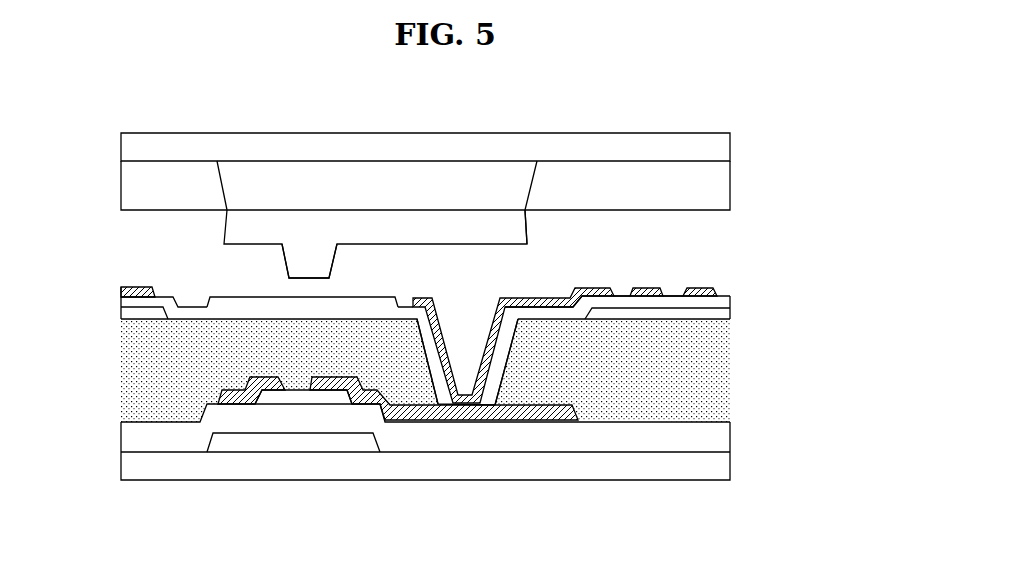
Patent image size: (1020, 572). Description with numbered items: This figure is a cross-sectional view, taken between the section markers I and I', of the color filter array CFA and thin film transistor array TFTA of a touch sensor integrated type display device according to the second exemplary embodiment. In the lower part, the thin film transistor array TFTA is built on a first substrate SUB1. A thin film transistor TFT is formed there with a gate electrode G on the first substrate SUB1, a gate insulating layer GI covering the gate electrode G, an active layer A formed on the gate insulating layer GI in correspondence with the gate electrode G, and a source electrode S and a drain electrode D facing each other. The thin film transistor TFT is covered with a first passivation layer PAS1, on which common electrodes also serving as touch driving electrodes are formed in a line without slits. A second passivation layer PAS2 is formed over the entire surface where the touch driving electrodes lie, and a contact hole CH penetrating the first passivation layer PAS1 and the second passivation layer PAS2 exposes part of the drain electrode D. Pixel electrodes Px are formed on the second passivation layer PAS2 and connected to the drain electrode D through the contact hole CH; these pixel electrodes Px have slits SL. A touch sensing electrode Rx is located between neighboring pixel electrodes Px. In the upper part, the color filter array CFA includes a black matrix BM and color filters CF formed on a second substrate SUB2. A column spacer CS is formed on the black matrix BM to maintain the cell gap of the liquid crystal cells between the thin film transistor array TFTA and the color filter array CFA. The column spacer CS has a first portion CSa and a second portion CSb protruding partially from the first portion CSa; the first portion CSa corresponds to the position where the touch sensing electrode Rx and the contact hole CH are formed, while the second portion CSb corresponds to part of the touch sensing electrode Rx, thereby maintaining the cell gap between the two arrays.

The color filter array CFA is at (434, 182).
The second substrate SUB2 is at (723, 148).
The color filter CF is at (121, 187).
The black matrix BM is at (384, 177).
The column spacer CS is at (223, 228).
The first portion CSa is at (527, 228).
The second portion CSb is at (330, 262).
The thin film transistor array TFTA is at (442, 396).
The first substrate SUB1 is at (723, 467).
The gate insulating layer GI is at (723, 435).
The thin film transistor TFT is at (381, 464).
The gate electrode G is at (282, 442).
The active layer A is at (320, 397).
The source electrode S is at (243, 402).
The drain electrode D is at (540, 420).
The first passivation layer PAS1 is at (723, 365).
The second passivation layer PAS2 is at (723, 302).
The touch sensing electrode Rx is at (226, 299).
The contact hole CH is at (467, 324).
The pixel electrode Px is at (135, 283).
The slit SL is at (622, 288).
The section line start I is at (119, 502).
The section line end I' is at (729, 502).